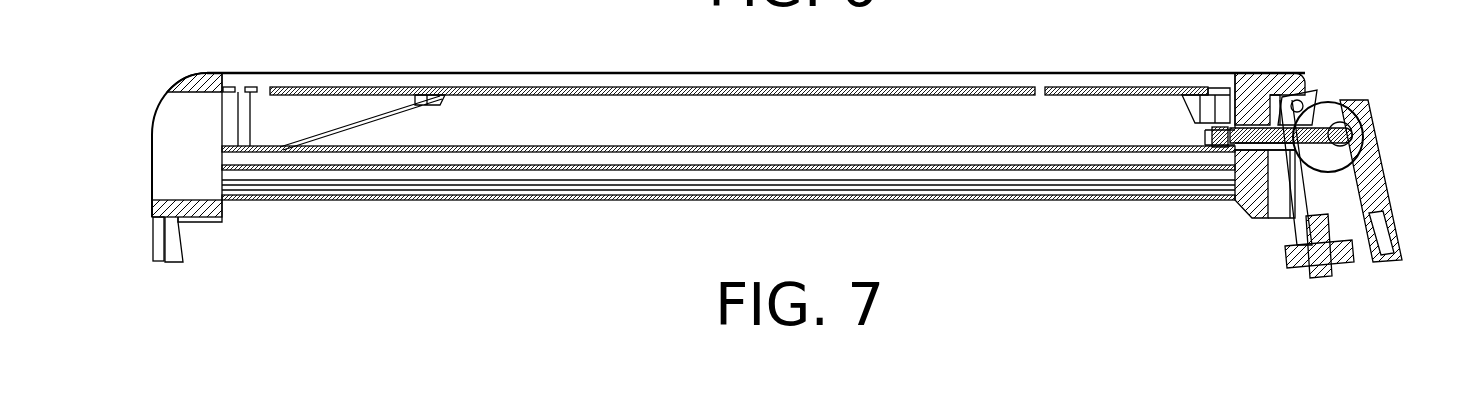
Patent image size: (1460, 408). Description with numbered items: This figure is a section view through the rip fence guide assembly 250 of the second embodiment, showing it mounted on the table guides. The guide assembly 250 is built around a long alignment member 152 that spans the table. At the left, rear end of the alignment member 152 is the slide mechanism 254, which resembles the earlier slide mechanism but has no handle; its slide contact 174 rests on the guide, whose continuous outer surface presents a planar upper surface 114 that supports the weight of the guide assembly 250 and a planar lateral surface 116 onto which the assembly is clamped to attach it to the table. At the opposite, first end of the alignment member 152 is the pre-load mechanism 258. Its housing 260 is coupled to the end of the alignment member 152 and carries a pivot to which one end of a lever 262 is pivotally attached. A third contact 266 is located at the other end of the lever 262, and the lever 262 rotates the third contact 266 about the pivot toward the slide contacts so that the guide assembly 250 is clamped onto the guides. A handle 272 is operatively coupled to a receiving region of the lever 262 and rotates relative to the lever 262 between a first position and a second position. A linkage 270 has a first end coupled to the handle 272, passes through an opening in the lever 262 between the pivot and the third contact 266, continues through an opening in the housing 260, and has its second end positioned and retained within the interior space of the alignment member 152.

The guide assembly 250 is at (215, 40).
The slide mechanism 254 is at (132, 115).
The alignment member 152 is at (490, 73).
The upper surface 114 is at (210, 222).
The slide contact 174 is at (175, 262).
The lateral surface 116 is at (183, 248).
The pre-load mechanism 258 is at (1387, 80).
The housing 260 is at (1268, 70).
The lever 262 is at (1318, 92).
The handle 272 is at (1388, 183).
The linkage 270 is at (1250, 215).
The third contact 266 is at (1302, 272).